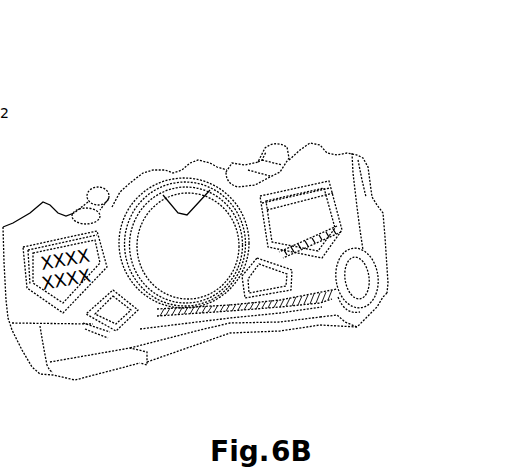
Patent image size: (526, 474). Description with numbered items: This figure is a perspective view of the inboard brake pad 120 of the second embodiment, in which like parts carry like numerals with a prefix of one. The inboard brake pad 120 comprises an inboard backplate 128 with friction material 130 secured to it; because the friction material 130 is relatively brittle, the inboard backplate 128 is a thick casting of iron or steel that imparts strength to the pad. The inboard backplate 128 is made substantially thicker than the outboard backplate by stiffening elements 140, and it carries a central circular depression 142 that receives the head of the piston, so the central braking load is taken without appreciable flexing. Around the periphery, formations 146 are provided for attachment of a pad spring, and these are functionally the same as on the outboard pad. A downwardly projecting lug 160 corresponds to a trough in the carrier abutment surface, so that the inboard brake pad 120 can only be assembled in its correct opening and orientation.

The inboard brake pad 120 is at (373, 237).
The inboard backplate 128 is at (338, 172).
The friction material 130 is at (386, 294).
The stiffening elements 140 is at (285, 254).
The central circular depression 142 is at (163, 195).
The formations 146 is at (97, 187).
The downwardly projecting lug 160 is at (361, 319).